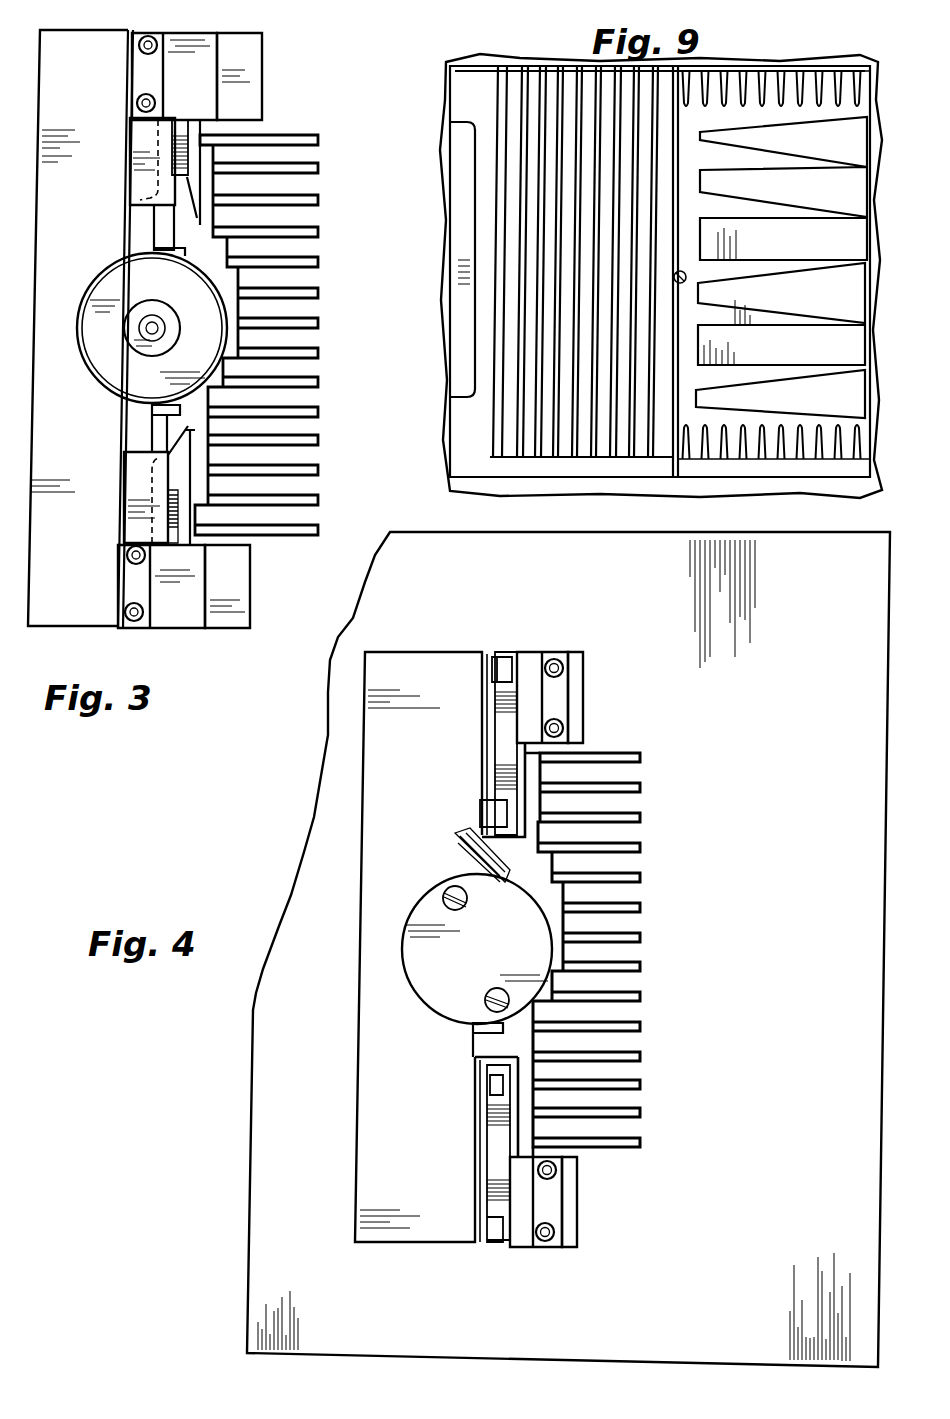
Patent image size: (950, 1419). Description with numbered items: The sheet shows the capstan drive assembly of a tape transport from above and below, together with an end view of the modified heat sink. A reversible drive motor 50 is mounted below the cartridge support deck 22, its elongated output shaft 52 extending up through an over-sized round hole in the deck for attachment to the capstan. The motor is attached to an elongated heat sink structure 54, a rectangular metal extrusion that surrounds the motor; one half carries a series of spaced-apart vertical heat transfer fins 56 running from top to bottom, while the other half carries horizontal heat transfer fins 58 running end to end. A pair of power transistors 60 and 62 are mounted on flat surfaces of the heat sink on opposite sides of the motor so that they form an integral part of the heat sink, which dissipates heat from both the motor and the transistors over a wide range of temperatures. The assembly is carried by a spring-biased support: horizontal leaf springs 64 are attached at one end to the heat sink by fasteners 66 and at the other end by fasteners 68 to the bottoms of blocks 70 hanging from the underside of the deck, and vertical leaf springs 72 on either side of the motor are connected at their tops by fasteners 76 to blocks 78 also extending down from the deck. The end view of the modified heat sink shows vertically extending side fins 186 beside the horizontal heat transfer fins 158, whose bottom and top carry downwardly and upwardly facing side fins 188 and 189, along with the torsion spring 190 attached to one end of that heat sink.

In FIG. 4, the cartridge support deck 22 is at (258, 1180).
In FIG. 3, the reversible drive motor 50 is at (114, 372).
In FIG. 4, the reversible drive motor 50 is at (430, 988).
In FIG. 3, the output shaft 52 is at (145, 330).
In FIG. 3, the heat sink structure 54 is at (120, 30).
In FIG. 4, the heat sink structure 54 is at (433, 650).
In FIG. 3, the vertical heat transfer fins 56 is at (318, 294).
In FIG. 4, the vertical heat transfer fins 56 is at (640, 940).
In FIG. 3, the horizontal heat transfer fins 58 is at (38, 598).
In FIG. 4, the horizontal heat transfer fins 58 is at (370, 962).
In FIG. 3, the power transistor 60 is at (182, 132).
In FIG. 4, the power transistor 60 is at (520, 700).
In FIG. 3, the power transistor 62 is at (195, 560).
In FIG. 4, the power transistor 62 is at (515, 1232).
In FIG. 3, the leaf springs 64 is at (190, 45).
In FIG. 4, the leaf springs 64 is at (530, 662).
In FIG. 3, the fasteners 66 is at (137, 100).
In FIG. 4, the fasteners 68 is at (561, 724).
In FIG. 3, the blocks 70 is at (262, 50).
In FIG. 4, the blocks 70 is at (585, 730).
In FIG. 3, the vertical leaf springs 72 is at (128, 198).
In FIG. 3, the fasteners 76 is at (198, 213).
In FIG. 3, the blocks 78 is at (140, 160).
In FIG. 9, the horizontal heat transfer fins 158 is at (860, 367).
In FIG. 9, the side fins 186 is at (540, 105).
In FIG. 9, the downwardly facing side fins 188 is at (770, 462).
In FIG. 9, the upwardly facing side fins 189 is at (767, 72).
In FIG. 9, the torsion spring 190 is at (688, 278).